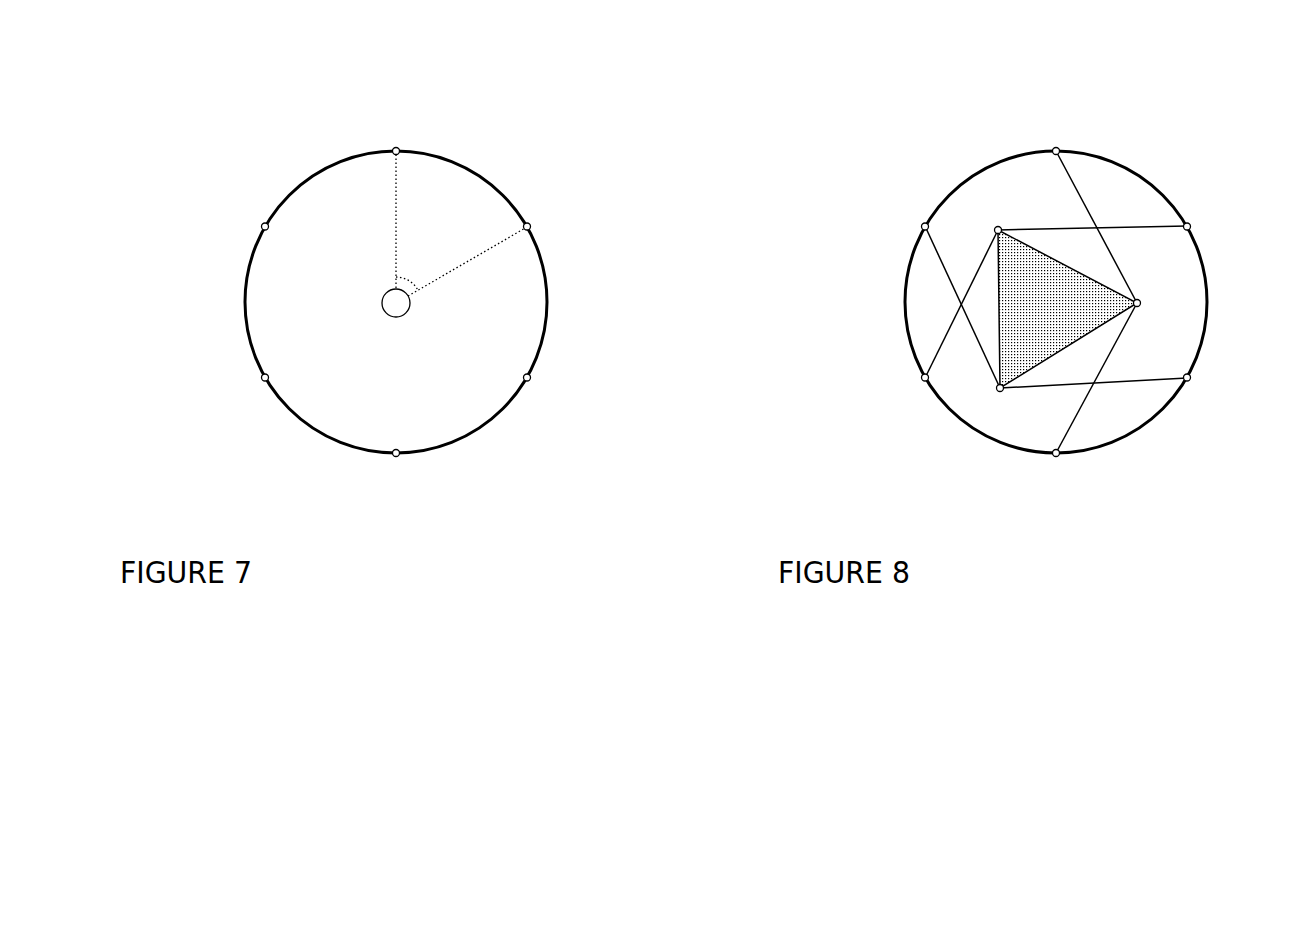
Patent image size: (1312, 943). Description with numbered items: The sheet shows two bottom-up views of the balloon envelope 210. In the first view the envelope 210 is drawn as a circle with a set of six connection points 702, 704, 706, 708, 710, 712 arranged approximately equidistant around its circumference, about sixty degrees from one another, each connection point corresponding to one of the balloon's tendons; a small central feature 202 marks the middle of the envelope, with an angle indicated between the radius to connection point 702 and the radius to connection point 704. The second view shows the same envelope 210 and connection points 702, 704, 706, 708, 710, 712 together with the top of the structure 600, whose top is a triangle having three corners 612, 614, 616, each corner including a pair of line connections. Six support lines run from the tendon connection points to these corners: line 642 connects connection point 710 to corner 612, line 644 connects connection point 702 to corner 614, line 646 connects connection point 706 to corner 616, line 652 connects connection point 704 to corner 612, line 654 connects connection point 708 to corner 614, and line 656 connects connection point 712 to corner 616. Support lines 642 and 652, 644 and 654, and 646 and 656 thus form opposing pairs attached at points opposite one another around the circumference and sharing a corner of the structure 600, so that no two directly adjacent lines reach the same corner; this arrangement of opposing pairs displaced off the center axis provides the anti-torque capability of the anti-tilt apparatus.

In FIG. 7, the balloon envelope 210 is at (458, 163).
In FIG. 8, the balloon envelope 210 is at (1068, 175).
In FIG. 7, the center point 202 is at (402, 317).
In FIG. 7, the connection point 702 is at (396, 137).
In FIG. 8, the connection point 702 is at (1055, 137).
In FIG. 7, the connection point 704 is at (550, 221).
In FIG. 8, the connection point 704 is at (1209, 222).
In FIG. 7, the connection point 706 is at (550, 389).
In FIG. 8, the connection point 706 is at (1208, 389).
In FIG. 7, the connection point 708 is at (396, 472).
In FIG. 8, the connection point 708 is at (1055, 473).
In FIG. 7, the connection point 710 is at (242, 389).
In FIG. 8, the connection point 710 is at (901, 389).
In FIG. 7, the connection point 712 is at (245, 221).
In FIG. 8, the connection point 712 is at (905, 222).
In FIG. 8, the structure 600 is at (1067, 309).
In FIG. 8, the corner 612 is at (998, 226).
In FIG. 8, the corner 614 is at (1142, 300).
In FIG. 8, the corner 616 is at (1000, 393).
In FIG. 8, the support line 642 is at (940, 347).
In FIG. 8, the support line 644 is at (1083, 158).
In FIG. 8, the support line 646 is at (1142, 383).
In FIG. 8, the support line 652 is at (1118, 226).
In FIG. 8, the support line 654 is at (1077, 420).
In FIG. 8, the support line 656 is at (940, 268).